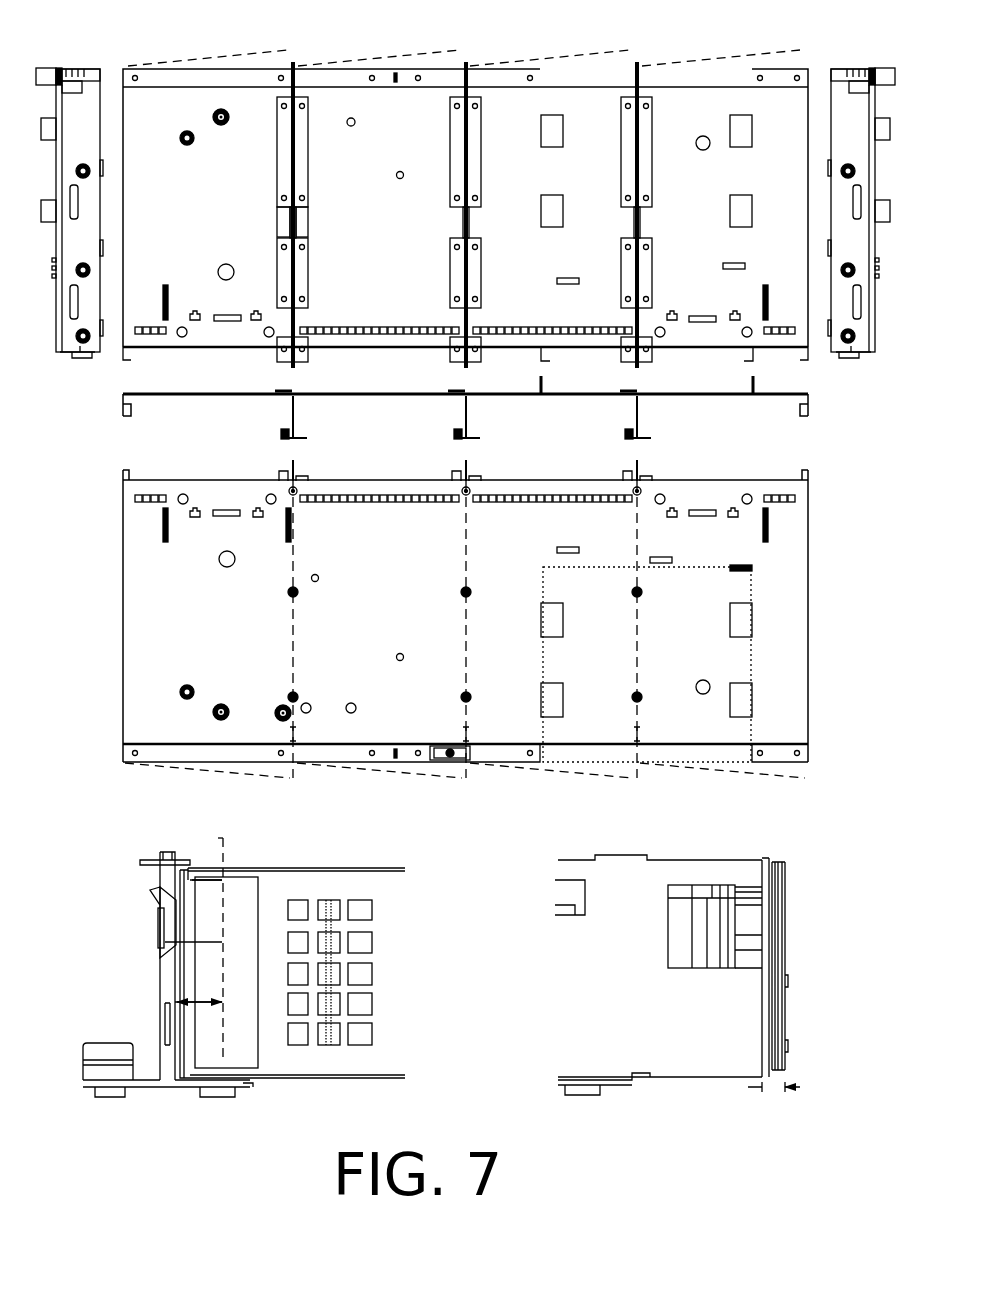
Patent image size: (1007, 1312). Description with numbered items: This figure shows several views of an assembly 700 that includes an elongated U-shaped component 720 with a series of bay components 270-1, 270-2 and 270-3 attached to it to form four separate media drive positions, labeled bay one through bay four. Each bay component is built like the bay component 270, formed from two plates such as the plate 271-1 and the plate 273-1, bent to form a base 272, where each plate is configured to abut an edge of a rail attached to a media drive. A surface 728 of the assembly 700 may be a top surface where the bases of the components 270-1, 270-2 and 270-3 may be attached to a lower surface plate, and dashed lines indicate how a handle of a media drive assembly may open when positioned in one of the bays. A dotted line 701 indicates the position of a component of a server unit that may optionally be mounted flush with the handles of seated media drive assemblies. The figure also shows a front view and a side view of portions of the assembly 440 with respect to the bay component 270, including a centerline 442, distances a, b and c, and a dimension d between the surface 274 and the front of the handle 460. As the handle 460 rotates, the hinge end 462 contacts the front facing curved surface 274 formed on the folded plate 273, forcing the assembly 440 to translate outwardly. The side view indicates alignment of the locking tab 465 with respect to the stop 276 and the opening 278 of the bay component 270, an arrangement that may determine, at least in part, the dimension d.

The assembly 700 is at (130, 37).
The elongated U-shaped component 720 is at (123, 478).
The bay component 270-1 is at (262, 249).
The bay component 270-2 is at (435, 249).
The bay component 270-3 is at (612, 249).
The plate 273-1 is at (290, 222).
The plate 271-1 is at (297, 222).
The surface 728 is at (485, 635).
The dotted line 701 is at (655, 568).
The bay component 270 is at (145, 848).
The plate 273 is at (158, 1010).
The surface 274 is at (178, 917).
The locking tab 465 is at (165, 928).
The base 272 is at (137, 1085).
The stop 276 is at (735, 922).
The opening 278 is at (697, 890).
The assembly 440 is at (308, 860).
The board centerline 442 is at (225, 845).
The handle 460 is at (778, 862).
The hinge end 462 is at (782, 922).